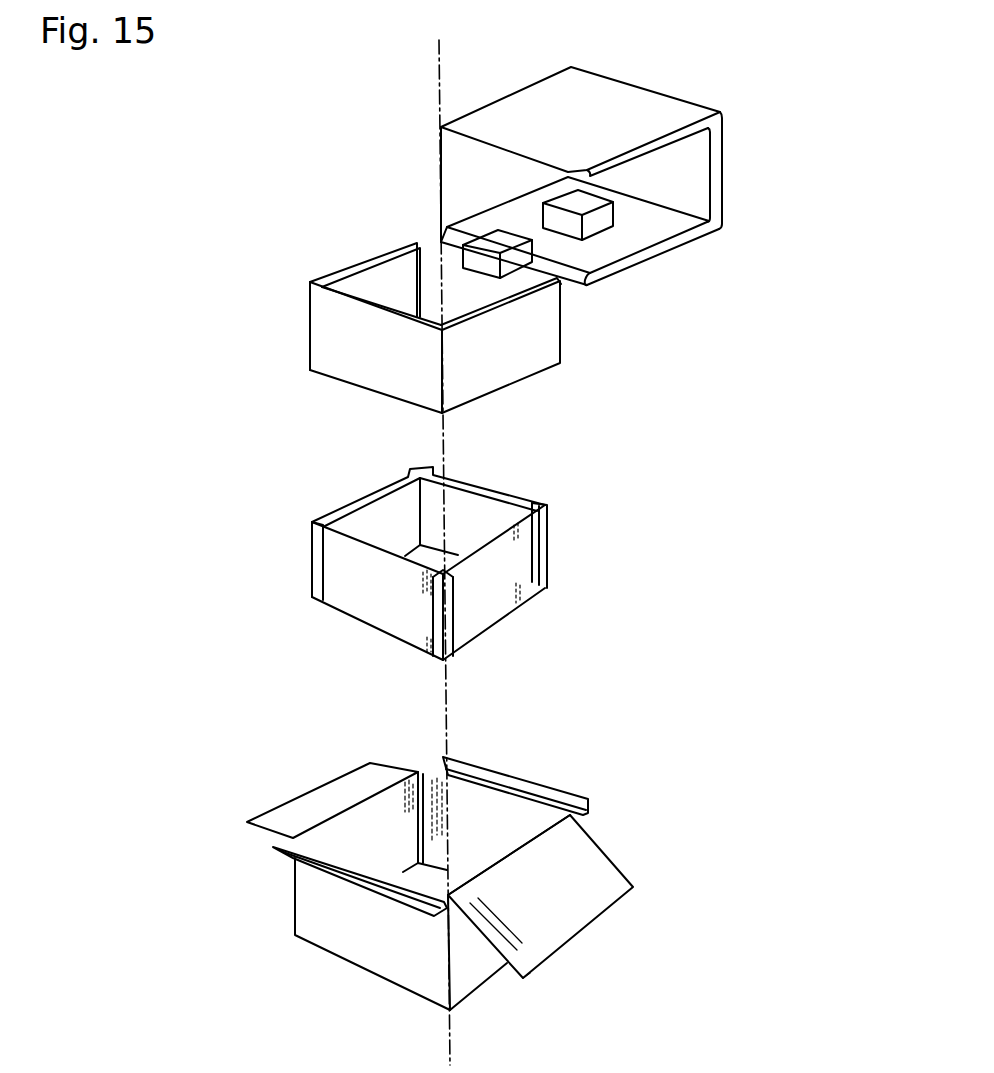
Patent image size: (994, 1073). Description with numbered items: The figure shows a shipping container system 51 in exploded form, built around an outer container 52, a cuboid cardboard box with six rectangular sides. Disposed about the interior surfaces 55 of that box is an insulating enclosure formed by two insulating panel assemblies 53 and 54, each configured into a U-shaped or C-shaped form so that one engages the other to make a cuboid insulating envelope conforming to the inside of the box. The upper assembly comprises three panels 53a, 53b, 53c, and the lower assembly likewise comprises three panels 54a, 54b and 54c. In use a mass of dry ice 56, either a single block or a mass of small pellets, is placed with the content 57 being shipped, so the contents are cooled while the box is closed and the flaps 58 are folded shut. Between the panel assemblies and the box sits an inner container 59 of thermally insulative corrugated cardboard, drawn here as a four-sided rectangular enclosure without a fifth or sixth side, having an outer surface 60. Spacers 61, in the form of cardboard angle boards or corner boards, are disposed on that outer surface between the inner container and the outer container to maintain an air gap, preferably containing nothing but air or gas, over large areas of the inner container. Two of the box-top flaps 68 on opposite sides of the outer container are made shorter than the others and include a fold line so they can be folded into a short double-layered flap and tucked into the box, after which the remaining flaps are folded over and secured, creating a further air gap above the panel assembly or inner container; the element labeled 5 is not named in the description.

The reinforcing rail 5 is at (513, 776).
The shipping container system 51 is at (355, 203).
The outer container 52 is at (357, 967).
The insulating panel assembly 53 is at (508, 108).
The panel 53a is at (697, 239).
The panel 53b is at (727, 226).
The panel 53c is at (667, 145).
The insulating panel assembly 54 is at (316, 263).
The panel 54a is at (305, 343).
The panel 54b is at (372, 383).
The panel 54c is at (563, 340).
The interior surfaces 55 is at (366, 837).
The mass of dry ice 56 is at (617, 215).
The content 57 is at (533, 255).
The flaps 58 is at (340, 777).
The inner container 59 is at (392, 638).
The outer surface 60 is at (343, 605).
The spacers 61 is at (457, 633).
The box-top flaps 68 is at (589, 799).